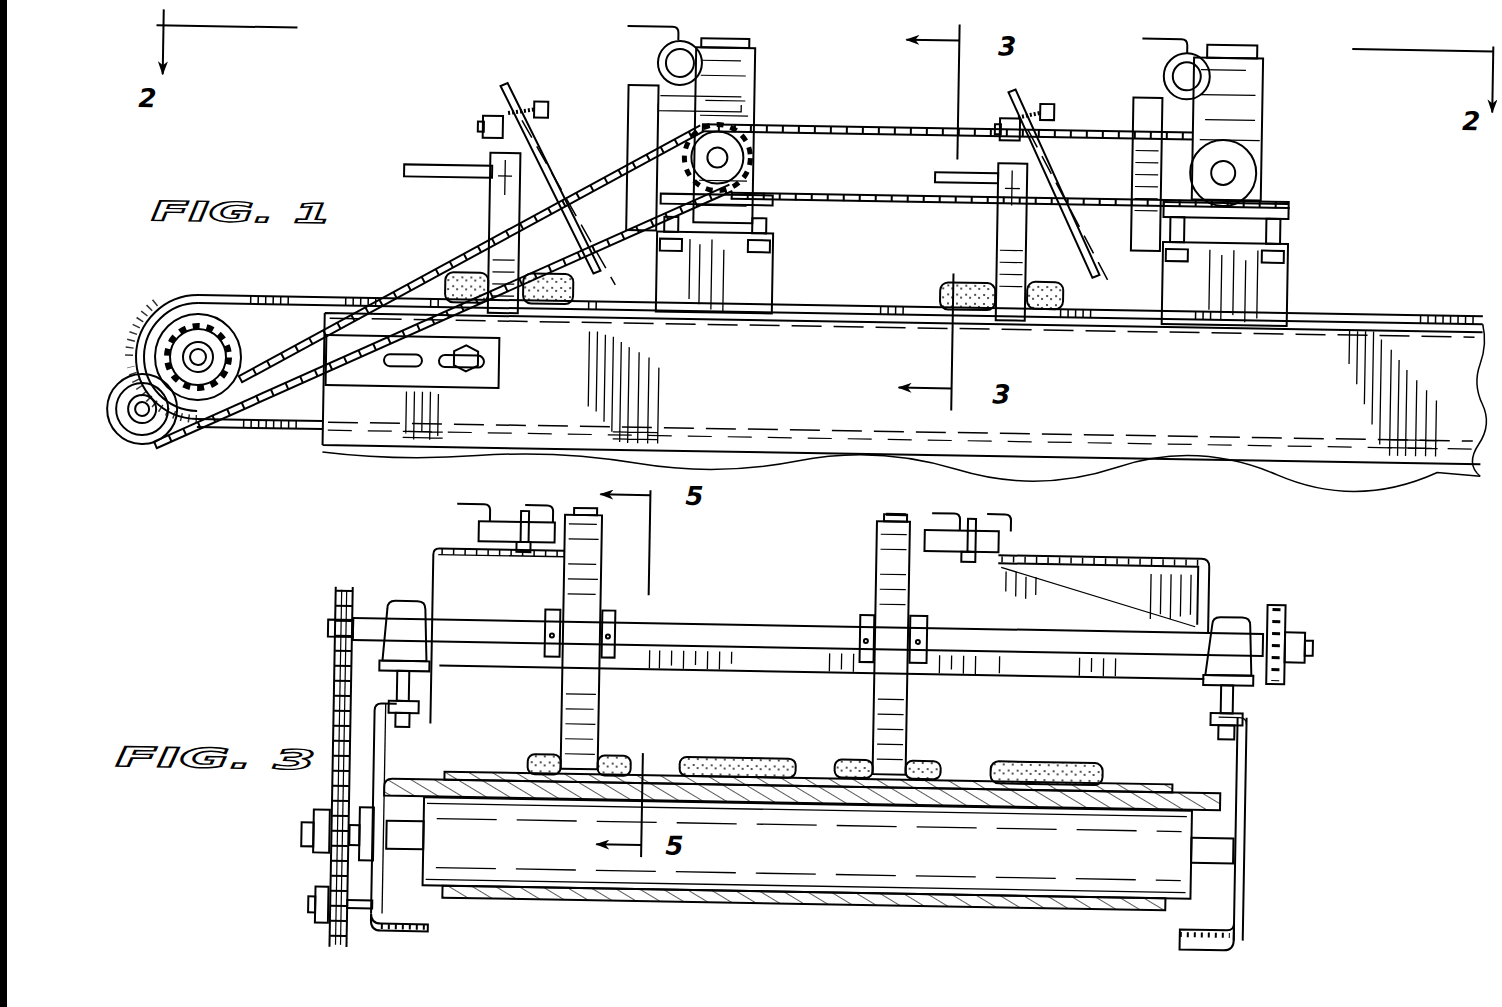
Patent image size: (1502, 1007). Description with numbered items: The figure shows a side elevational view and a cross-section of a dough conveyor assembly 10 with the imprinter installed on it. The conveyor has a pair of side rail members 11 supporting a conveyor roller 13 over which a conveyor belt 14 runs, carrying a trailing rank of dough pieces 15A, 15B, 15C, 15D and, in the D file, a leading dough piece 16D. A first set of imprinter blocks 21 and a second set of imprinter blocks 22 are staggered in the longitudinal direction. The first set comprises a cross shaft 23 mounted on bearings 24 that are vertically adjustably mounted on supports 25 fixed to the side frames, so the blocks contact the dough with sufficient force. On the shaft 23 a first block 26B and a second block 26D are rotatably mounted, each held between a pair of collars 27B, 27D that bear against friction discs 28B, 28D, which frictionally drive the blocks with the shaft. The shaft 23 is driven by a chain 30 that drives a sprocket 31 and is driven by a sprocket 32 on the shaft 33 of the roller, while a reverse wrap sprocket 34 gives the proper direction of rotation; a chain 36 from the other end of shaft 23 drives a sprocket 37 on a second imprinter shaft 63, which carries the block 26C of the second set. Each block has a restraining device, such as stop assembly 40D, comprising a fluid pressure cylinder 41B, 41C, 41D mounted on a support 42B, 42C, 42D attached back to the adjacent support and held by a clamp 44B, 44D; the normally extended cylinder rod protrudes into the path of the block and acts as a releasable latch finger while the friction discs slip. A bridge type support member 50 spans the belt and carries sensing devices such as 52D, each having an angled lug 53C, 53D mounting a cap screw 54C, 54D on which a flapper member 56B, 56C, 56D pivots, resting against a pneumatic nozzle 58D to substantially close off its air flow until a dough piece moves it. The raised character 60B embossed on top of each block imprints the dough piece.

In FIG. 1, the conveyor assembly 10 is at (330, 458).
In FIG. 1, the side rail member 11 is at (345, 402).
In FIG. 3, the side rail member 11 is at (412, 918).
In FIG. 1, the conveyor roller 13 is at (232, 336).
In FIG. 3, the conveyor roller 13 is at (884, 866).
In FIG. 1, the conveyor belt 14 is at (245, 294).
In FIG. 3, the conveyor belt 14 is at (792, 770).
In FIG. 3, the dough piece 15A is at (1062, 754).
In FIG. 3, the dough piece 15B is at (925, 755).
In FIG. 3, the dough piece 15C is at (740, 754).
In FIG. 1, the dough piece 15D is at (449, 268).
In FIG. 3, the dough piece 15D is at (612, 755).
In FIG. 1, the dough piece 16D is at (1045, 298).
In FIG. 1, the first set of imprinter blocks 21 is at (634, 54).
In FIG. 1, the second set of imprinter blocks 22 is at (1266, 102).
In FIG. 3, the cross shaft 23 is at (755, 625).
In FIG. 1, the bearing 24 is at (718, 233).
In FIG. 3, the bearing 24 is at (385, 606).
In FIG. 1, the support 25 is at (661, 277).
In FIG. 3, the support 25 is at (378, 724).
In FIG. 3, the first block 26B is at (852, 629).
In FIG. 1, the imprinting block 26C is at (1242, 62).
In FIG. 1, the second block 26D is at (755, 72).
In FIG. 3, the second block 26D is at (600, 541).
In FIG. 3, the collar 27B is at (930, 622).
In FIG. 3, the collar 27D is at (618, 628).
In FIG. 3, the friction disc 28B is at (862, 606).
In FIG. 3, the friction disc 28D is at (615, 607).
In FIG. 1, the chain 30 is at (164, 440).
In FIG. 3, the chain 30 is at (335, 668).
In FIG. 1, the sprocket 31 is at (728, 150).
In FIG. 3, the sprocket 31 is at (368, 646).
In FIG. 1, the sprocket 32 is at (203, 326).
In FIG. 1, the shaft 33 is at (190, 355).
In FIG. 3, the shaft 33 is at (317, 838).
In FIG. 1, the reverse wrap sprocket 34 is at (144, 428).
In FIG. 3, the reverse wrap sprocket 34 is at (320, 905).
In FIG. 1, the chain 36 is at (830, 192).
In FIG. 3, the chain 36 is at (1280, 592).
In FIG. 3, the sprocket 37 is at (1302, 620).
In FIG. 3, the stop assembly 40D is at (565, 508).
In FIG. 3, the fluid pressure cylinder 41B is at (1000, 527).
In FIG. 1, the fluid pressure cylinder 41C is at (1168, 51).
In FIG. 3, the fluid pressure cylinder 41D is at (478, 525).
In FIG. 3, the support 42B is at (1150, 540).
In FIG. 1, the support 42C is at (1132, 100).
In FIG. 3, the support 42D is at (432, 556).
In FIG. 3, the clamp 44B is at (990, 495).
In FIG. 3, the clamp 44D is at (520, 508).
In FIG. 1, the support member 50 is at (486, 191).
In FIG. 1, the sensing device 52D is at (545, 162).
In FIG. 1, the angled lug 53C is at (1007, 87).
In FIG. 1, the angled lug 53D is at (483, 113).
In FIG. 1, the cap screw 54C is at (1043, 89).
In FIG. 1, the cap screw 54D is at (535, 94).
In FIG. 3, the flapper member 56B is at (908, 702).
In FIG. 1, the flapper member 56C is at (1058, 176).
In FIG. 3, the flapper member 56D is at (600, 696).
In FIG. 1, the pneumatic nozzle 58D is at (488, 218).
In FIG. 3, the character 60B is at (893, 497).
In FIG. 1, the second imprinter shaft 63 is at (1234, 153).